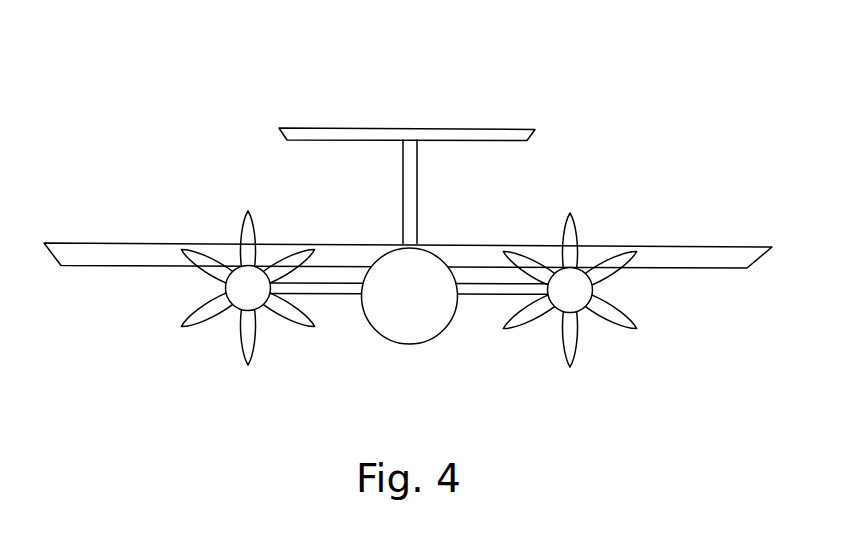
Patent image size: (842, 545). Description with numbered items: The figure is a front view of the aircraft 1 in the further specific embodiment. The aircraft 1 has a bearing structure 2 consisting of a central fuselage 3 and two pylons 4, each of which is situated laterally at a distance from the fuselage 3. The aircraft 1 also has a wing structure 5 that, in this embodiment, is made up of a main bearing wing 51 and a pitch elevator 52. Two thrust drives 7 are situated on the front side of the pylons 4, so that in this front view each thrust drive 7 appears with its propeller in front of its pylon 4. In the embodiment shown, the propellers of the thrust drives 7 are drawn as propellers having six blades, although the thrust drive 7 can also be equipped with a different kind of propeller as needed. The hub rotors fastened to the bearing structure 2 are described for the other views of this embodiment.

The aircraft 1 is at (130, 144).
The bearing structure 2 is at (313, 294).
The fuselage 3 is at (408, 345).
The pylon 4 is at (570, 291).
The wing structure 5 is at (466, 140).
The main bearing wing 51 is at (697, 247).
The pitch elevator 52 is at (467, 128).
The thrust drive 7 is at (197, 318).